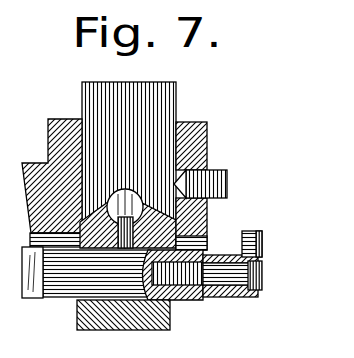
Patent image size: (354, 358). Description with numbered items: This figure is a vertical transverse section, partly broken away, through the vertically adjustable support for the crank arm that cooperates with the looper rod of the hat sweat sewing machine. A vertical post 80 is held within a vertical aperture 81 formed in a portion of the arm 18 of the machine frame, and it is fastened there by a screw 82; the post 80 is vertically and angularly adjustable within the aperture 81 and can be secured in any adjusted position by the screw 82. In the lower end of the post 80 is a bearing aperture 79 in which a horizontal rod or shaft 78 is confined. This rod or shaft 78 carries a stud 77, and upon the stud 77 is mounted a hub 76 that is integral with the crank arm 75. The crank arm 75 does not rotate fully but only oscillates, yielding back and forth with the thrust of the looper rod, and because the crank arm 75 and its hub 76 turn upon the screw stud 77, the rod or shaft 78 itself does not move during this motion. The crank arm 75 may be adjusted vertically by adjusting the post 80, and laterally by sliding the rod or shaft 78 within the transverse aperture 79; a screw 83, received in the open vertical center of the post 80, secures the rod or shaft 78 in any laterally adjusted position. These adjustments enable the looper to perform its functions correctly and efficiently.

The arm 18 is at (37, 174).
The crank arm 75 is at (249, 234).
The hub 76 is at (233, 298).
The stud 77 is at (262, 267).
The horizontal rod or shaft 78 is at (63, 294).
The bearing aperture 79 is at (174, 304).
The vertical post 80 is at (90, 95).
The vertical aperture 81 is at (177, 123).
The screw 82 is at (221, 178).
The screw 83 is at (110, 200).